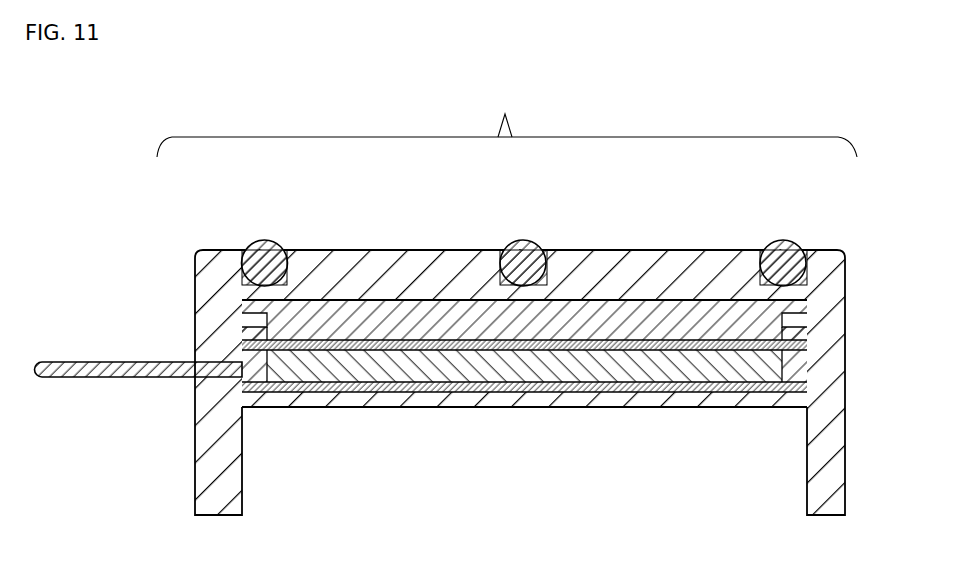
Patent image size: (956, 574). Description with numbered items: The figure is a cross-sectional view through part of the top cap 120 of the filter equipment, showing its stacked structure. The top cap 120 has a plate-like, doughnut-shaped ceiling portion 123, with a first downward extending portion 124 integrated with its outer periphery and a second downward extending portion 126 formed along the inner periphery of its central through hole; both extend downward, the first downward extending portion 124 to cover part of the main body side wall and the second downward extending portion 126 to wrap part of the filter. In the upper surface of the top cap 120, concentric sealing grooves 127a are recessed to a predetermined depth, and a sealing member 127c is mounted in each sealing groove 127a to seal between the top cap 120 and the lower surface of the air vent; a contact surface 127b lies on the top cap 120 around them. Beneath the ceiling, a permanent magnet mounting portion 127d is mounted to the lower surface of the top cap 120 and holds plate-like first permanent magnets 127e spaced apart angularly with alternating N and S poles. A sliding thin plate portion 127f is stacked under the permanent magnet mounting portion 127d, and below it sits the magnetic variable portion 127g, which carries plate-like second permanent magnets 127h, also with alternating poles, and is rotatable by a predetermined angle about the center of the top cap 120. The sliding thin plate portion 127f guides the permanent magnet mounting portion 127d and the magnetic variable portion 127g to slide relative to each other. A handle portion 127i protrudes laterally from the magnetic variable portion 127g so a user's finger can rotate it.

The top cap 120 is at (507, 122).
The ceiling portion 123 is at (522, 408).
The first downward extending portion 124 is at (246, 497).
The second downward extending portion 126 is at (810, 500).
The sealing groove 127a is at (282, 242).
The contact surface 127b is at (404, 248).
The sealing member 127c is at (262, 240).
The permanent magnet mounting portion 127d is at (258, 320).
The first permanent magnet 127e is at (300, 310).
The sliding thin plate portion 127f is at (807, 340).
The magnetic variable portion 127g is at (240, 400).
The second permanent magnet 127h is at (288, 396).
The handle portion 127i is at (80, 378).